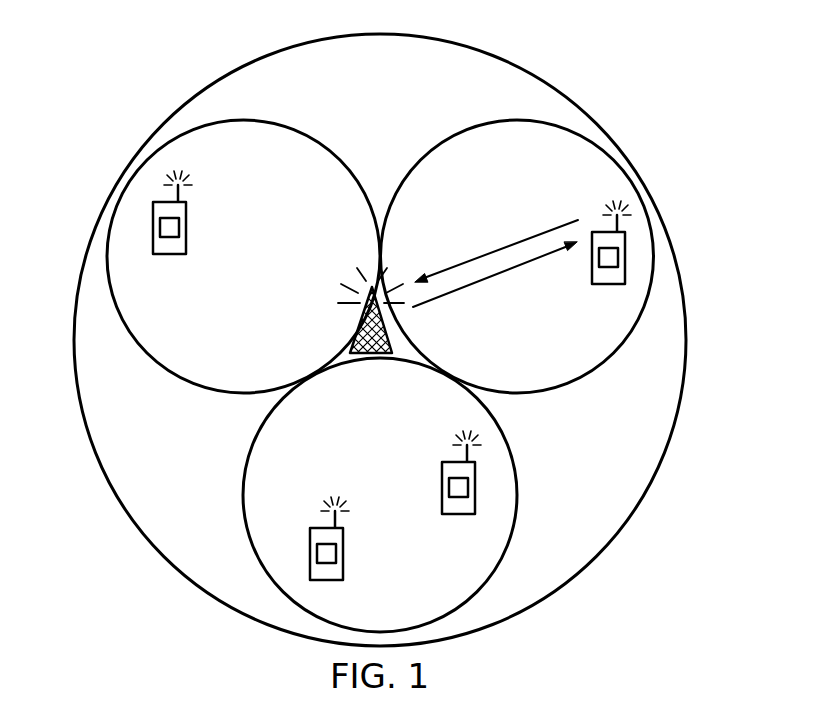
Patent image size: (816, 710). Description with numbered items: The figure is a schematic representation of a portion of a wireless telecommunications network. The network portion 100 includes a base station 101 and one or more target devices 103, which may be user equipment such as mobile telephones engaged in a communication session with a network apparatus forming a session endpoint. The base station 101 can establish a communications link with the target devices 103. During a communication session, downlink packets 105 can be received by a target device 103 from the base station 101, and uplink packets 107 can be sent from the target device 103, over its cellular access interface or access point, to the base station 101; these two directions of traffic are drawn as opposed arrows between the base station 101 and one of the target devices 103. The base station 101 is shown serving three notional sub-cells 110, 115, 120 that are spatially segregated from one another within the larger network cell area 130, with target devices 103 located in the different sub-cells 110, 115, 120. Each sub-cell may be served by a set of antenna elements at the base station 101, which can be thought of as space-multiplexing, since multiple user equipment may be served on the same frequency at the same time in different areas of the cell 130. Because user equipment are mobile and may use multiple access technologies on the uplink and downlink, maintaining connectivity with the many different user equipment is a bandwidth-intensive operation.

The network portion 100 is at (662, 116).
The base station 101 is at (361, 320).
The target device 103 is at (153, 228).
The downlink packets 105 is at (520, 265).
The uplink packets 107 is at (565, 225).
The sub-cell 110 is at (456, 133).
The sub-cell 115 is at (302, 133).
The sub-cell 120 is at (243, 497).
The network cell area 130 is at (686, 338).